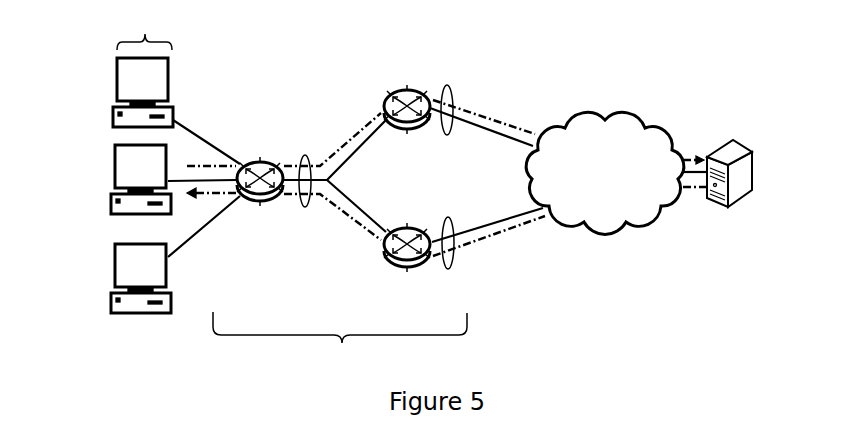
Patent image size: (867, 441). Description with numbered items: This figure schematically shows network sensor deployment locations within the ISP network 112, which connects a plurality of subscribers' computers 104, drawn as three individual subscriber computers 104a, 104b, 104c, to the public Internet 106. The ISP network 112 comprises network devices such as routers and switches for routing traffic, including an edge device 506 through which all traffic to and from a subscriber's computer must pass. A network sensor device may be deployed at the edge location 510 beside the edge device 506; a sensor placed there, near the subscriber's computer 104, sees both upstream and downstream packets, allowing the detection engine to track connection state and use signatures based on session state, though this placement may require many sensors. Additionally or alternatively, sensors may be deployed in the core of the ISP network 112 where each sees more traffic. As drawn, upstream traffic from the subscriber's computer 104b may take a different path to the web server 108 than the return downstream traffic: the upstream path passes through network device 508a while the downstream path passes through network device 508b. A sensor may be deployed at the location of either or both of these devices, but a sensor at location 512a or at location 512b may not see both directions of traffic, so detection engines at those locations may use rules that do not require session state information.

The subscribers' computers 104 is at (144, 27).
The subscriber's computer 104a is at (117, 89).
The subscriber's computer 104b is at (115, 181).
The subscriber's computer 104c is at (115, 275).
The public Internet 106 is at (606, 117).
The web server 108 is at (733, 140).
The ISP network 112 is at (340, 342).
The edge device 506 is at (262, 200).
The network device 508a is at (407, 132).
The network device 508b is at (407, 225).
The network sensor deployment location 510 is at (305, 155).
The network sensor deployment location 512a is at (447, 85).
The network sensor deployment location 512b is at (448, 270).